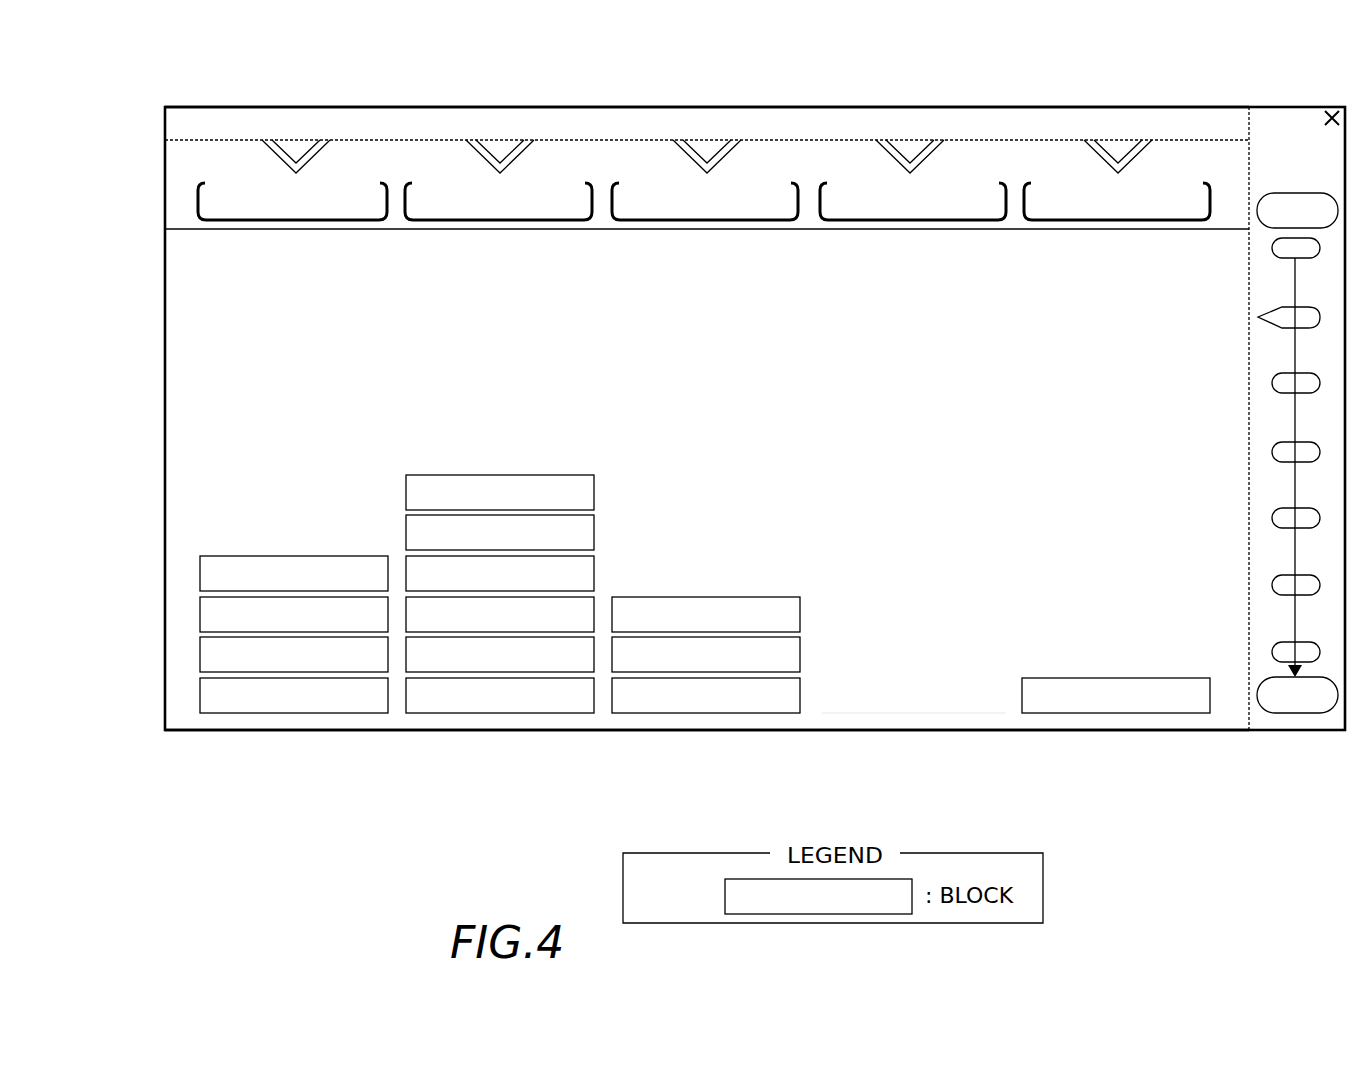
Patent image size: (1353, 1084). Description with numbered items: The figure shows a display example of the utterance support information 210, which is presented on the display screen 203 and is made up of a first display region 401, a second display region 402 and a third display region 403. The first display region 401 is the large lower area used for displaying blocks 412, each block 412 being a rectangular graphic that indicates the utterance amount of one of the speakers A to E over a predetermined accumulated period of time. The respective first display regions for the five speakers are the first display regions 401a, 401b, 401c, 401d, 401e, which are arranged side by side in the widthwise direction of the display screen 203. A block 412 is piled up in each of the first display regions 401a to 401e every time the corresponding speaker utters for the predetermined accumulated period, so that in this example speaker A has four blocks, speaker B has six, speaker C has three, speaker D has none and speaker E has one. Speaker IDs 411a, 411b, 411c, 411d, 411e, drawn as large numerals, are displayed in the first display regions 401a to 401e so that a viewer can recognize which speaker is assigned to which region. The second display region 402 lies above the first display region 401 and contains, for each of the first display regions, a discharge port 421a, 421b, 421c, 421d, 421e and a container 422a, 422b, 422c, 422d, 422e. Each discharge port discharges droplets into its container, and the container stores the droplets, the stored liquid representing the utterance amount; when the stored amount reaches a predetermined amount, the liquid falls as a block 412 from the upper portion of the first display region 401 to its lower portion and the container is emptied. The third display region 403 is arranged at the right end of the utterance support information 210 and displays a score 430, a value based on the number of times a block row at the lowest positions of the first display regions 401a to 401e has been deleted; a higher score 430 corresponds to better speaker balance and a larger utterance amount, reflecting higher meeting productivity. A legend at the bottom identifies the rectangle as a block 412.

The utterance support information 210 is at (158, 309).
The display screen 203 is at (769, 107).
The second display region 402 is at (165, 188).
The first display region 401 is at (165, 420).
The discharge port 421a is at (294, 142).
The discharge port 421b is at (498, 142).
The discharge port 421c is at (705, 142).
The discharge port 421d is at (908, 142).
The discharge port 421e is at (1116, 142).
The container 422a is at (243, 222).
The container 422b is at (442, 222).
The container 422c is at (650, 222).
The container 422d is at (855, 222).
The container 422e is at (1062, 222).
The speaker ID 411a is at (318, 329).
The speaker ID 411b is at (527, 329).
The speaker ID 411c is at (748, 329).
The speaker ID 411d is at (948, 329).
The speaker ID 411e is at (1155, 329).
The first display region 401a is at (200, 745).
The first display region 401b is at (406, 745).
The first display region 401c is at (613, 745).
The first display region 401d is at (822, 745).
The first display region 401e is at (1023, 745).
The score 430 is at (1276, 116).
The third display region 403 is at (1292, 732).
The block 412 is at (725, 896).